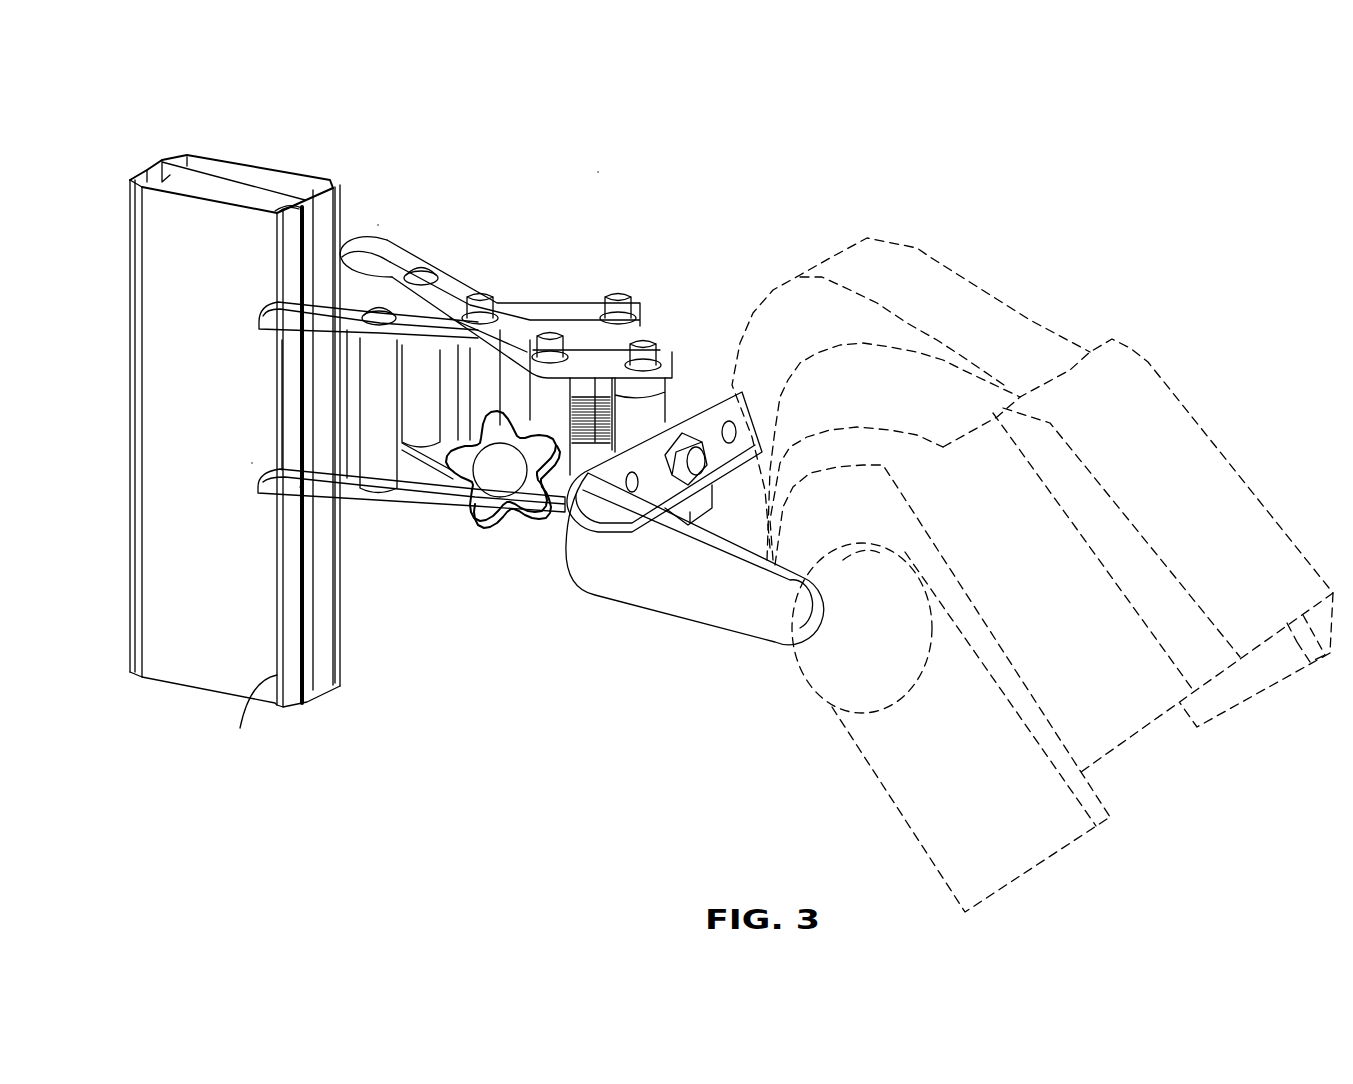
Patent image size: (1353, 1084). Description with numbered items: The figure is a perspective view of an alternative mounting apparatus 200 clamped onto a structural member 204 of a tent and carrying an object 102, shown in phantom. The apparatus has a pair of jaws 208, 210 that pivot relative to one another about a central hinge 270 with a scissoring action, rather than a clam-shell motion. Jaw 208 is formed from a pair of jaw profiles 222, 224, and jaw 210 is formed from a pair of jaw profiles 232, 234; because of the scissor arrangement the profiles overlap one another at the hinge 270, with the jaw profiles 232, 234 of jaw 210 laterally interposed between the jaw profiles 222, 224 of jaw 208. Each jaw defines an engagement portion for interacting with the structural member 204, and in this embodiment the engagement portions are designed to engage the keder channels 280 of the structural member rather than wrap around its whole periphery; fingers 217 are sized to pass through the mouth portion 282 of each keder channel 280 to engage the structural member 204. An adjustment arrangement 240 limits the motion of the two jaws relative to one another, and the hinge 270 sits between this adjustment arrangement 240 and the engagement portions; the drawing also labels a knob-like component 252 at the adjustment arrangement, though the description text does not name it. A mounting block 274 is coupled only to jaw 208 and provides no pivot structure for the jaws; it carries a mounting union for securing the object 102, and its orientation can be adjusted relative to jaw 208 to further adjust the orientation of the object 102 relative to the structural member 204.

The mounting apparatus 200 is at (601, 169).
The structural member 204 is at (285, 643).
The jaw 208 is at (381, 222).
The jaw 210 is at (380, 535).
The fingers 217 is at (250, 461).
The jaw profile 222 is at (402, 238).
The jaw profile 224 is at (347, 400).
The jaw profile 232 is at (320, 322).
The jaw profile 234 is at (325, 482).
The adjustment arrangement 240 is at (523, 549).
The adjustment knob 252 is at (477, 517).
The hinge 270 is at (491, 291).
The mounting block 274 is at (687, 338).
The keder channels 280 is at (277, 675).
The mouth portion 282 is at (300, 487).
The object 102 is at (1137, 271).